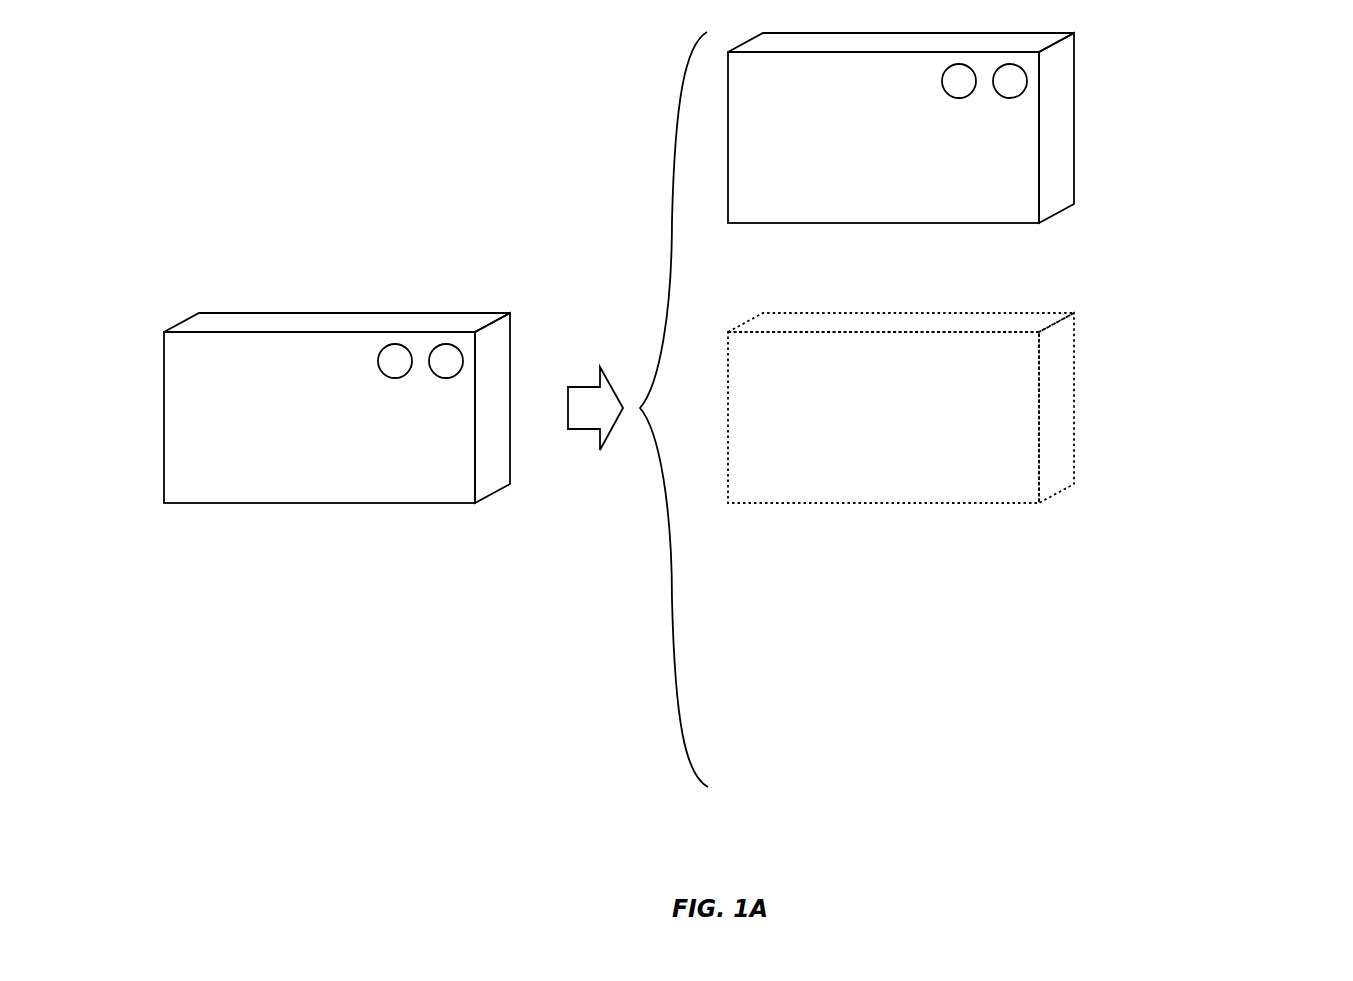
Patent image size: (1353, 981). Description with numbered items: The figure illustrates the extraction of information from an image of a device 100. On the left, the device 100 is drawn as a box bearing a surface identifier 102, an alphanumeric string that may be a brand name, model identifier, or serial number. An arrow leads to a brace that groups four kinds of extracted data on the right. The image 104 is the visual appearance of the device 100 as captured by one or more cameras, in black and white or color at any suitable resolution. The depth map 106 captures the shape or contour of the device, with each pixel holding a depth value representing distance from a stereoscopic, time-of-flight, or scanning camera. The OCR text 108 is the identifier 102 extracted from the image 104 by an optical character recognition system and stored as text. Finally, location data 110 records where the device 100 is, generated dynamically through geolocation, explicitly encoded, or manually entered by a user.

The device 100 is at (315, 210).
The surface identifier 102 is at (255, 607).
The image 104 is at (1073, 70).
The depth map 106 is at (1073, 339).
The OCR text 108 is at (963, 618).
The location data 110 is at (1027, 745).